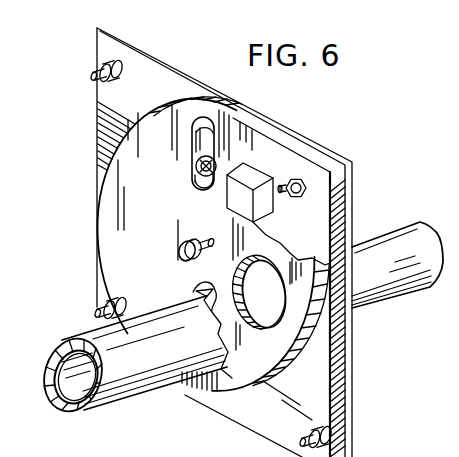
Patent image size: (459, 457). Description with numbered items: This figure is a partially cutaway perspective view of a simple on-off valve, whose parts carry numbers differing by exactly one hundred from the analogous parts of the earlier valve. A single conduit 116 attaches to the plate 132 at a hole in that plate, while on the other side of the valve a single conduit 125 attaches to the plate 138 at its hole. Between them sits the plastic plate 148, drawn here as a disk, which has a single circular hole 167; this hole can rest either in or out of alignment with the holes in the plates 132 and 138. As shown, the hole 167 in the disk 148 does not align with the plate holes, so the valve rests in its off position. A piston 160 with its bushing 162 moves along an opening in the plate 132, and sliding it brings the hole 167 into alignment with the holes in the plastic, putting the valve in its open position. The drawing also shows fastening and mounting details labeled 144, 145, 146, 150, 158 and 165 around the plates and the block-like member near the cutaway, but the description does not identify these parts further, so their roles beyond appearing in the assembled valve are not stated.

The conduit 116 is at (388, 238).
The conduit 125 is at (127, 378).
The plate 132 is at (352, 203).
The plate 138 is at (347, 189).
The screw 144 is at (98, 82).
The nut 145 is at (115, 78).
The nut 146 is at (302, 198).
The plastic plate 148 is at (318, 335).
The screw 150 is at (180, 250).
The slot 158 is at (192, 130).
The piston 160 is at (195, 183).
The bushing 162 is at (195, 162).
The block 165 is at (254, 170).
The circular hole 167 is at (262, 298).